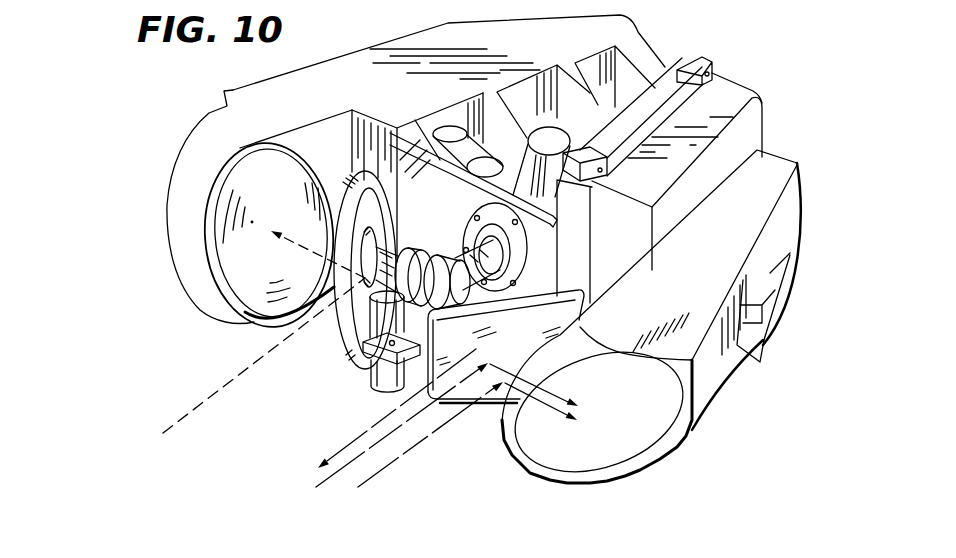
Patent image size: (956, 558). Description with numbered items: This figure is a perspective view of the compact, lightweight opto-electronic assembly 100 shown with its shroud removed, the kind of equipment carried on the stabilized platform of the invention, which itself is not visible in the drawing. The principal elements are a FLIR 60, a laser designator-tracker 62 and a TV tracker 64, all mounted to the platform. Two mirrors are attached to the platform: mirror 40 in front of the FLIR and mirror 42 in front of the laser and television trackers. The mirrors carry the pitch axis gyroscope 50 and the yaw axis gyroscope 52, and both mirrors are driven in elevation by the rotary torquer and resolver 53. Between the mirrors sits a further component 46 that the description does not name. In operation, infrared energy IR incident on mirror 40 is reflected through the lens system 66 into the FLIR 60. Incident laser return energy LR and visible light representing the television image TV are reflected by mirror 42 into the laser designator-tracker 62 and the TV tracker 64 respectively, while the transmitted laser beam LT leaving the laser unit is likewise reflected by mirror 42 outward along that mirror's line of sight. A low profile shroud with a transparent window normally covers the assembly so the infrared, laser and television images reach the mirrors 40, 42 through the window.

The sensor assembly 100 is at (165, 127).
The FLIR 60 is at (312, 68).
The laser designator-tracker 62 is at (734, 90).
The TV tracker 64 is at (773, 173).
The lens system 66 is at (256, 295).
The mirror 40 is at (350, 326).
The rotary torquer and resolver 53 is at (413, 252).
The yaw axis gyroscope 52 is at (446, 262).
The beam splitting mirror 46 is at (445, 302).
The pitch axis gyroscope 50 is at (393, 376).
The mirror 42 is at (545, 350).
The infrared energy IR is at (251, 342).
The transmitted laser beam LT is at (379, 420).
The laser return energy LR is at (446, 435).
The visible light for TV image TV is at (466, 443).